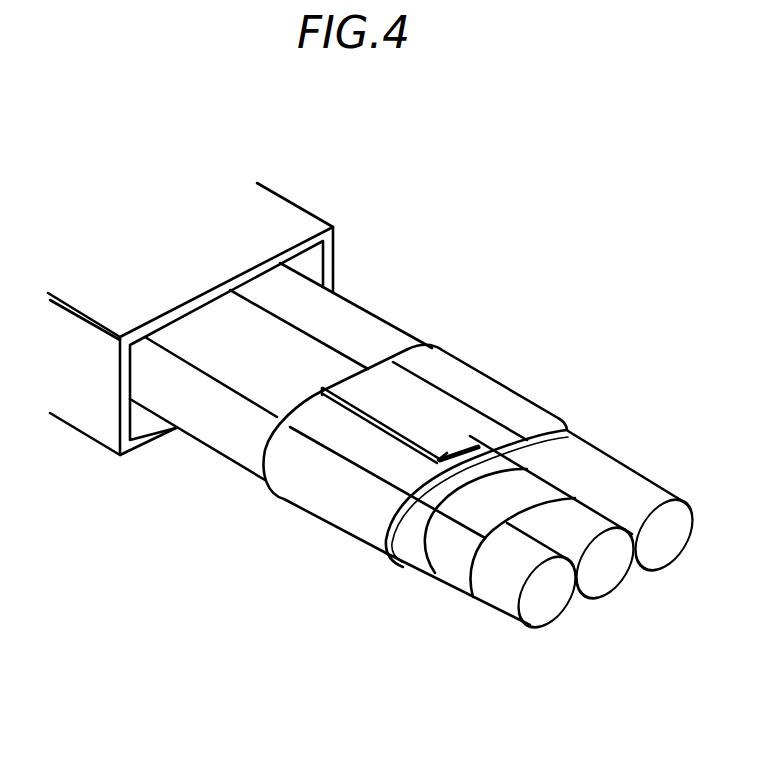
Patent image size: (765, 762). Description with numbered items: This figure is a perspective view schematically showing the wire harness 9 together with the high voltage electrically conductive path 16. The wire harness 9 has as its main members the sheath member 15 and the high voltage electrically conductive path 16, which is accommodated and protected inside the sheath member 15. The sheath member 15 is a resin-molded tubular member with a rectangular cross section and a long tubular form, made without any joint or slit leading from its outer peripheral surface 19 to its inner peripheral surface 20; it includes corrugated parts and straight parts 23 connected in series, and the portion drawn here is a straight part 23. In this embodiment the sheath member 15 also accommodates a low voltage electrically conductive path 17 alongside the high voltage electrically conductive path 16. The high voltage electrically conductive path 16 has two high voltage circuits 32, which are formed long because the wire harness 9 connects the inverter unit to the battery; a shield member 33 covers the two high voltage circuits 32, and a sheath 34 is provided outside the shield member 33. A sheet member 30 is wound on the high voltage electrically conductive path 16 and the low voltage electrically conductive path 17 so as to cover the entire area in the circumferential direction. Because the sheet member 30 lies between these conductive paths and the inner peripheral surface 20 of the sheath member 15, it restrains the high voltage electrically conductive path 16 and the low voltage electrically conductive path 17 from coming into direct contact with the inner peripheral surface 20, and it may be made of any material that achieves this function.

The wire harness 9 is at (361, 257).
The sheath member 15 is at (315, 208).
The high voltage electrically conductive path 16 is at (497, 617).
The low voltage electrically conductive path 17 is at (600, 473).
The outer peripheral surface 19 is at (198, 245).
The inner peripheral surface 20 is at (142, 423).
The straight part 23 is at (78, 391).
The sheet member 30 is at (470, 392).
The high voltage circuit 32 is at (600, 577).
The shield member 33 is at (453, 557).
The sheath 34 is at (413, 538).